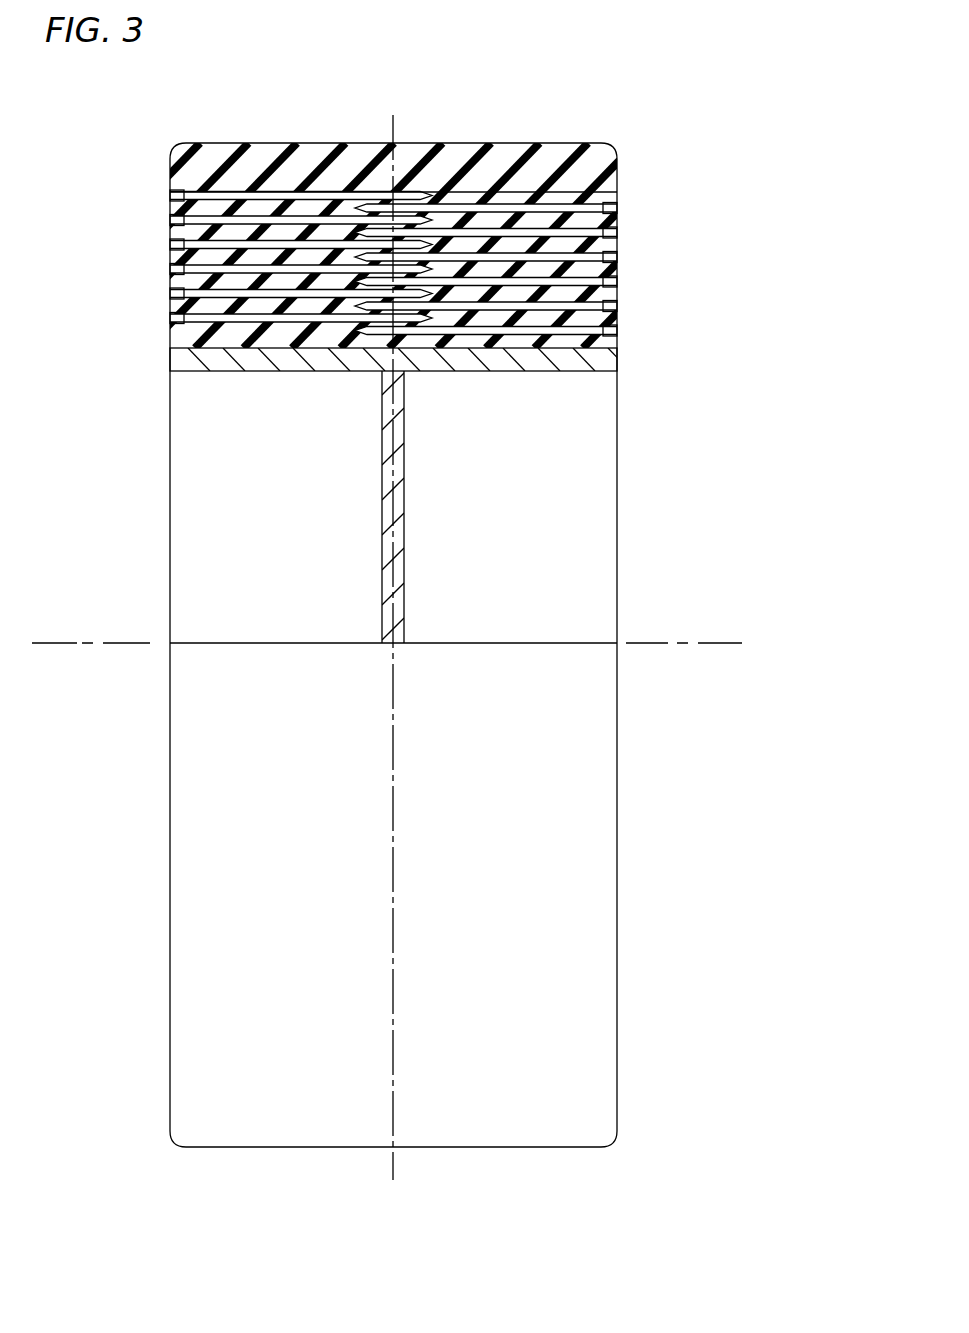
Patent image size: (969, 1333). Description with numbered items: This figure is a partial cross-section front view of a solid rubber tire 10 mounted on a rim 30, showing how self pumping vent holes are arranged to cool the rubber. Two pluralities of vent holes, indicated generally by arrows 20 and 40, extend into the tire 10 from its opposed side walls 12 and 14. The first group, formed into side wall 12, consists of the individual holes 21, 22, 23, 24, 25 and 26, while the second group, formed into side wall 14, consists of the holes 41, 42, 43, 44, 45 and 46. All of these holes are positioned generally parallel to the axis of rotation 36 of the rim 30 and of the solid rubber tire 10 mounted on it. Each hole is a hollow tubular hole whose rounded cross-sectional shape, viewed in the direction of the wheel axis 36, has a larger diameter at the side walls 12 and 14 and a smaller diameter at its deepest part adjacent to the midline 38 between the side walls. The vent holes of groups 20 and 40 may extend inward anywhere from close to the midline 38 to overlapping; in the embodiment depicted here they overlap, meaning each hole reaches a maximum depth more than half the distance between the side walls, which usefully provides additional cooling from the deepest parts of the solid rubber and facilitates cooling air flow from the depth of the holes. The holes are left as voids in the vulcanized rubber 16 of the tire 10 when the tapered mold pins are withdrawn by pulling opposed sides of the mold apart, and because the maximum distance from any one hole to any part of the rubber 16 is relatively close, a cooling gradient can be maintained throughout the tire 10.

The tire 10 is at (172, 98).
The side wall 12 is at (175, 165).
The side wall 14 is at (617, 166).
The vulcanized rubber 16 is at (378, 278).
The plurality of self pumping vent holes 20 is at (140, 345).
The hollow tubular hole 21 is at (172, 319).
The hollow tubular hole 22 is at (172, 294).
The hollow tubular hole 23 is at (172, 270).
The hollow tubular hole 24 is at (172, 245).
The hollow tubular hole 25 is at (172, 221).
The first electrode plate 26 is at (172, 195).
The rim 30 is at (357, 369).
The axis of rotation 36 is at (63, 641).
The midline 38 is at (395, 548).
The plurality of self pumping vent holes 40 is at (640, 367).
The hollow tubular hole 41 is at (617, 331).
The hollow tubular hole 42 is at (617, 306).
The hollow tubular hole 43 is at (617, 282).
The hollow tubular hole 44 is at (617, 257).
The hollow tubular hole 45 is at (617, 232).
The hollow tubular hole 46 is at (617, 208).